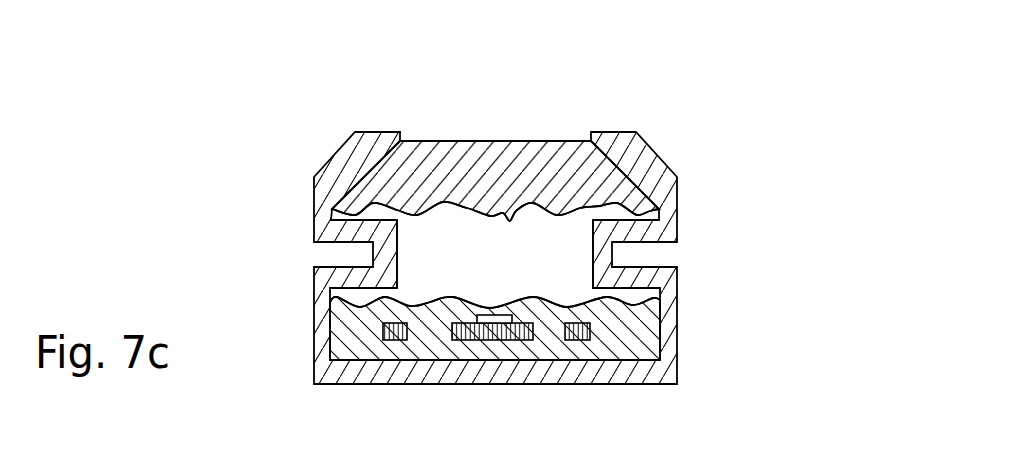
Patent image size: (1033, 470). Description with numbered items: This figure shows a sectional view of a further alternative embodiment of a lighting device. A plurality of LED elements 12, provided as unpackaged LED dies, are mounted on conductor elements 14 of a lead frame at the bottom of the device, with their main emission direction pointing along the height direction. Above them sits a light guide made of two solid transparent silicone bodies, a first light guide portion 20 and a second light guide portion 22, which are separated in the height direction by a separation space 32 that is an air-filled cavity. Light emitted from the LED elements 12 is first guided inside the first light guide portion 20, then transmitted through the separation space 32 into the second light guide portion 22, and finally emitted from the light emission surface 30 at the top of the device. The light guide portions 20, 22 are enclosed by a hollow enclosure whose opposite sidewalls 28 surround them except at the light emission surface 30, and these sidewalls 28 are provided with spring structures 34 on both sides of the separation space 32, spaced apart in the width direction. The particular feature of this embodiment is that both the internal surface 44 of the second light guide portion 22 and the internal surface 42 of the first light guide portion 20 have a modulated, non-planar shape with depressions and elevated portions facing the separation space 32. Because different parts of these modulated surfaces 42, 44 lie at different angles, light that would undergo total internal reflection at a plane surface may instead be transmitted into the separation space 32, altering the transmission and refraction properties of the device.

The LED element 12 is at (477, 316).
The conductor element 14 is at (510, 340).
The first light guide portion 20 is at (653, 342).
The second light guide portion 22 is at (483, 140).
The sidewall 28 is at (643, 343).
The light emission surface 30 is at (468, 140).
The separation space 32 is at (477, 268).
The spring structure 34 is at (513, 250).
The internal surface of the first light guide portion 42 is at (468, 285).
The internal surface of the second light guide portion 44 is at (512, 218).